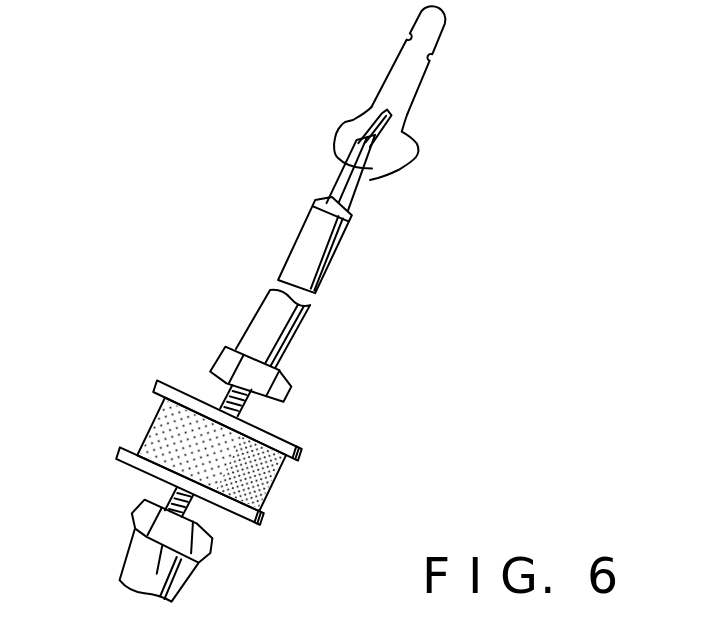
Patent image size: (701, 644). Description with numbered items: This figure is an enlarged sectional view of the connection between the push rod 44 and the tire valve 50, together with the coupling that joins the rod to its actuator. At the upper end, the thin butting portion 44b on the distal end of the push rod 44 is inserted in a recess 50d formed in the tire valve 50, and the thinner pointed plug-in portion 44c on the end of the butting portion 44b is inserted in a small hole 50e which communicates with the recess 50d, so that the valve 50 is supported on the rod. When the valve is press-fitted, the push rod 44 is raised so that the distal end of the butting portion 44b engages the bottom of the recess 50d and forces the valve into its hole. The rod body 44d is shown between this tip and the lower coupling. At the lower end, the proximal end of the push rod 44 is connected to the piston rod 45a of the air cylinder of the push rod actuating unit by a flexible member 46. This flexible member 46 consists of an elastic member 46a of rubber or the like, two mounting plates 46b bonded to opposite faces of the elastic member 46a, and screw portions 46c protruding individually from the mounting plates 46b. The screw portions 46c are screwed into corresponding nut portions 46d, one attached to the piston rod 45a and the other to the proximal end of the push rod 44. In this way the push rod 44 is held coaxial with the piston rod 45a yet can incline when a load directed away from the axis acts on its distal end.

The push rod 44 is at (330, 265).
The butting portion 44b is at (355, 188).
The plug-in portion 44c is at (380, 108).
The probe sleeve 44d is at (350, 206).
The piston rod 45a is at (128, 568).
The flexible member 46 is at (217, 472).
The elastic member 46a is at (166, 451).
The mounting plates 46b is at (90, 482).
The screw portions 46c is at (243, 406).
The nut portions 46d is at (283, 380).
The tire valve 50 is at (428, 57).
The recess 50d is at (390, 173).
The small hole 50e is at (408, 113).